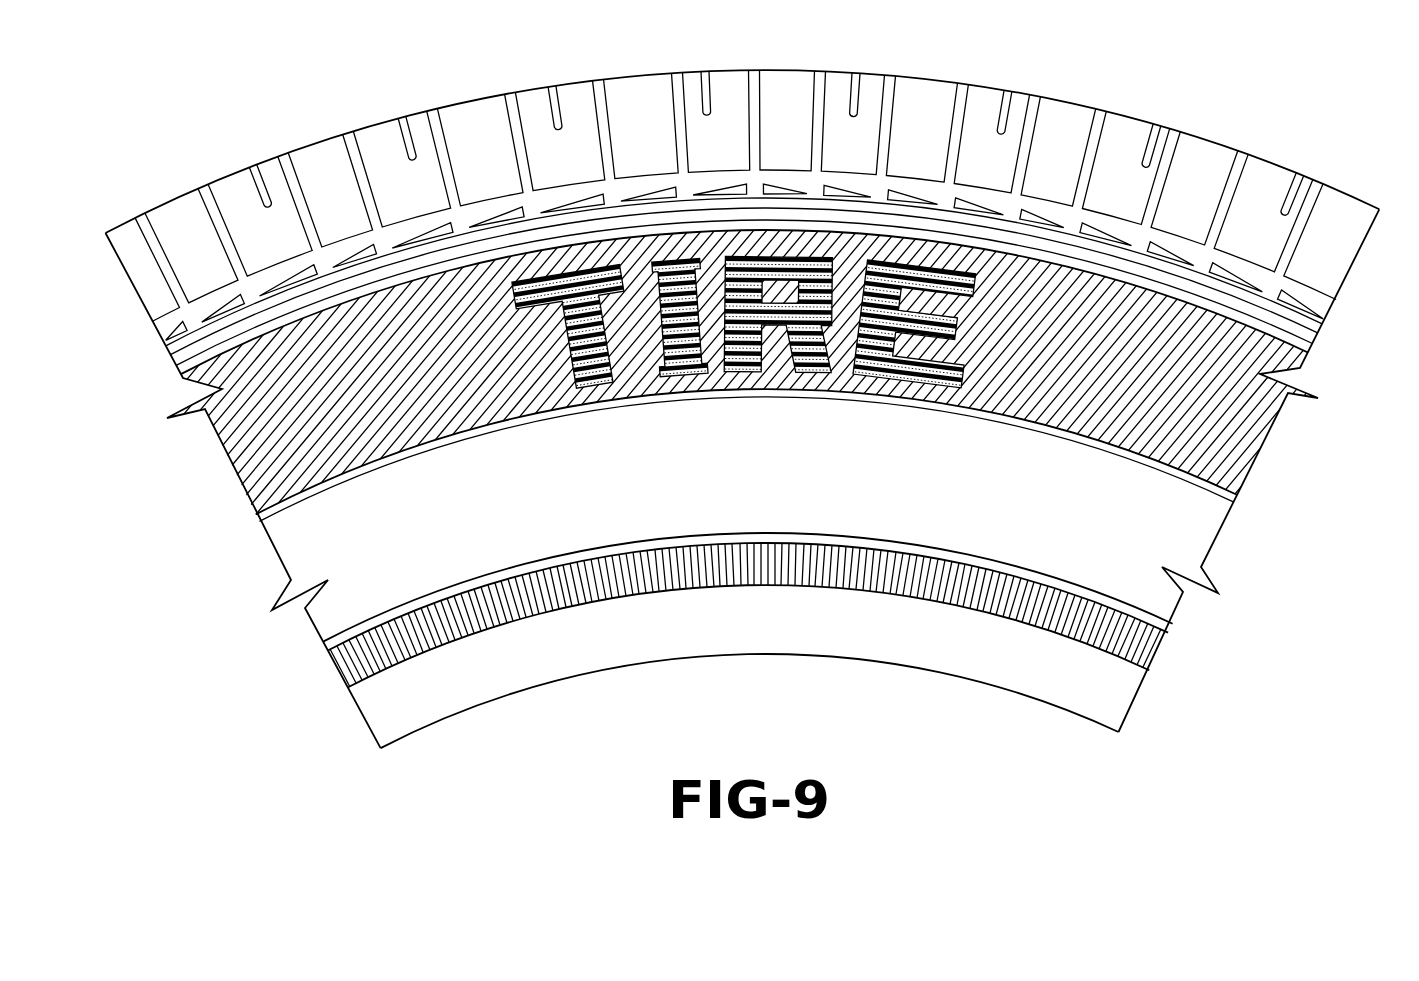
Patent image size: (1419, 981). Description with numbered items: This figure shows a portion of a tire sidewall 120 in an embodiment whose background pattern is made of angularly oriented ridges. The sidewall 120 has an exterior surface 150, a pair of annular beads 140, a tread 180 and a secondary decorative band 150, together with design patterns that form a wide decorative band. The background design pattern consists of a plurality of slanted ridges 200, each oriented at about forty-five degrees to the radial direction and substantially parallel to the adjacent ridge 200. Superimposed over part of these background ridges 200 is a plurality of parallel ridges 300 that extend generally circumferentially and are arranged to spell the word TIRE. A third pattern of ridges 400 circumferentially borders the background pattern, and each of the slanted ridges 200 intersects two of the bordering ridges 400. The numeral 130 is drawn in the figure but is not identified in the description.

The tire sidewall 120 is at (315, 533).
The belt cover layer 130 is at (1150, 587).
The annular beads 140 is at (1153, 705).
The exterior surface / secondary decorative band 150 is at (1150, 647).
The tread 180 is at (1147, 118).
The slanted ridges 200 is at (262, 440).
The parallel ridges 300 is at (543, 280).
The third pattern of ridges 400 is at (1300, 337).